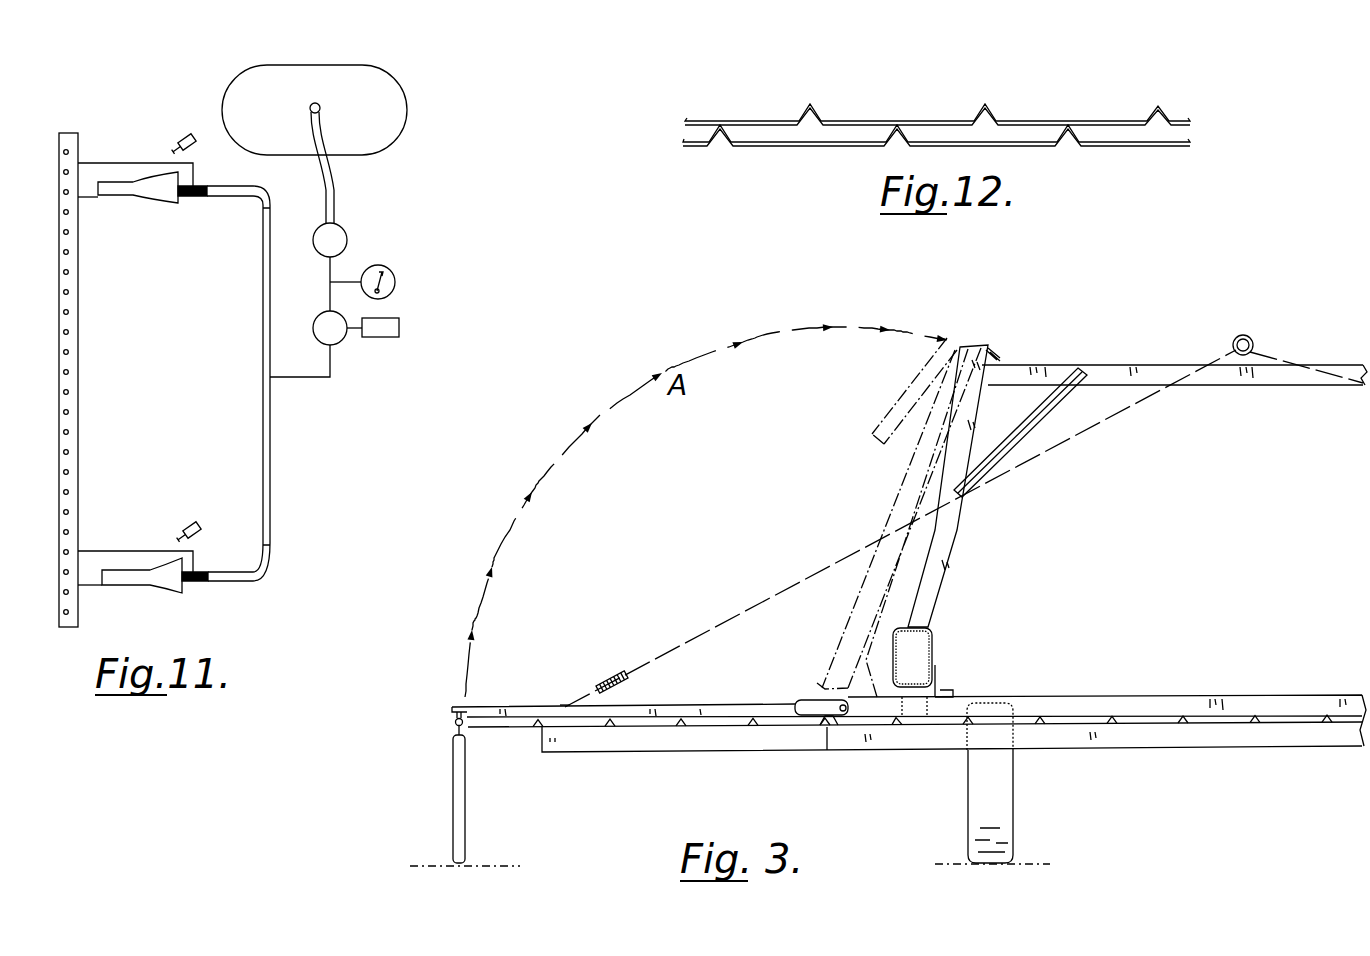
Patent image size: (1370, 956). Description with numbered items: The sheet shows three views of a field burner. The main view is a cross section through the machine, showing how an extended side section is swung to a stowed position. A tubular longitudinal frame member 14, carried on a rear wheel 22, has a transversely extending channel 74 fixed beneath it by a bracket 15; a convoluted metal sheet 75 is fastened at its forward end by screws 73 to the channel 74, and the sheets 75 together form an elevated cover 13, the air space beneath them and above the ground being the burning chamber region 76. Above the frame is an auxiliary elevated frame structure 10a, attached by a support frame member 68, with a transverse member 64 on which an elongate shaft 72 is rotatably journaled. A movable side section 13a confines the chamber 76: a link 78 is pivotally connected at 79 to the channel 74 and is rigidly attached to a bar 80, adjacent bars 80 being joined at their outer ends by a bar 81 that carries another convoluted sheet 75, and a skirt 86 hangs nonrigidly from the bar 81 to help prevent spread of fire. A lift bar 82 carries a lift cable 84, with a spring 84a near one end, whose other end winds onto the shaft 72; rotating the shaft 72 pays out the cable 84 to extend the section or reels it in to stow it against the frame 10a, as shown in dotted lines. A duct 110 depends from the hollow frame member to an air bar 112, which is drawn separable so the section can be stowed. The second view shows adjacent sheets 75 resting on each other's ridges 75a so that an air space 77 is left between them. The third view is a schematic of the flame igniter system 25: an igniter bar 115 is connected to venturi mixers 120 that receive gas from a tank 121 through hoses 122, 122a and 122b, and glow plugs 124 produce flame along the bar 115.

In FIG. 3, the auxiliary elevated frame structure 10a is at (1222, 293).
In FIG. 3, the cover 13 is at (1308, 626).
In FIG. 3, the movable side sections 13a is at (408, 656).
In FIG. 3, the longitudinal frame member 14 is at (934, 645).
In FIG. 3, the second expanse section 15 is at (940, 686).
In FIG. 3, the rear wheel 22 is at (1015, 845).
In FIG. 11, the flame igniter system 25 is at (151, 394).
In FIG. 3, the transverse member 64 is at (1043, 363).
In FIG. 3, the support frame member 68 is at (948, 553).
In FIG. 3, the elongate shaft 72 is at (1257, 350).
In FIG. 3, the screws 73 is at (608, 730).
In FIG. 3, the transversely extending channel 74 is at (1148, 695).
In FIG. 12, the convoluted metal sheet 75 is at (863, 120).
In FIG. 3, the convoluted metal sheet 75 is at (1228, 730).
In FIG. 12, the ridge 75a is at (861, 168).
In FIG. 3, the burning chamber region 76 is at (1304, 812).
In FIG. 12, the air space 77 is at (1007, 136).
In FIG. 3, the link 78 is at (812, 702).
In FIG. 3, the pivot connection 79 is at (850, 709).
In FIG. 3, the bar 80 is at (672, 707).
In FIG. 3, the bar 81 is at (452, 708).
In FIG. 3, the lift bar 82 is at (565, 706).
In FIG. 3, the lift cable 84 is at (810, 572).
In FIG. 3, the spring 84a is at (606, 672).
In FIG. 3, the skirt 86 is at (918, 389).
In FIG. 3, the duct 110 is at (862, 682).
In FIG. 3, the air bar 112 is at (765, 745).
In FIG. 11, the igniter bar 115 is at (78, 463).
In FIG. 11, the venturi mixer 120 is at (135, 190).
In FIG. 11, the tank 121 is at (360, 73).
In FIG. 11, the hose 122 is at (326, 206).
In FIG. 11, the hose 122a is at (263, 437).
In FIG. 11, the hose 122b is at (263, 315).
In FIG. 11, the glow plug 124 is at (183, 133).